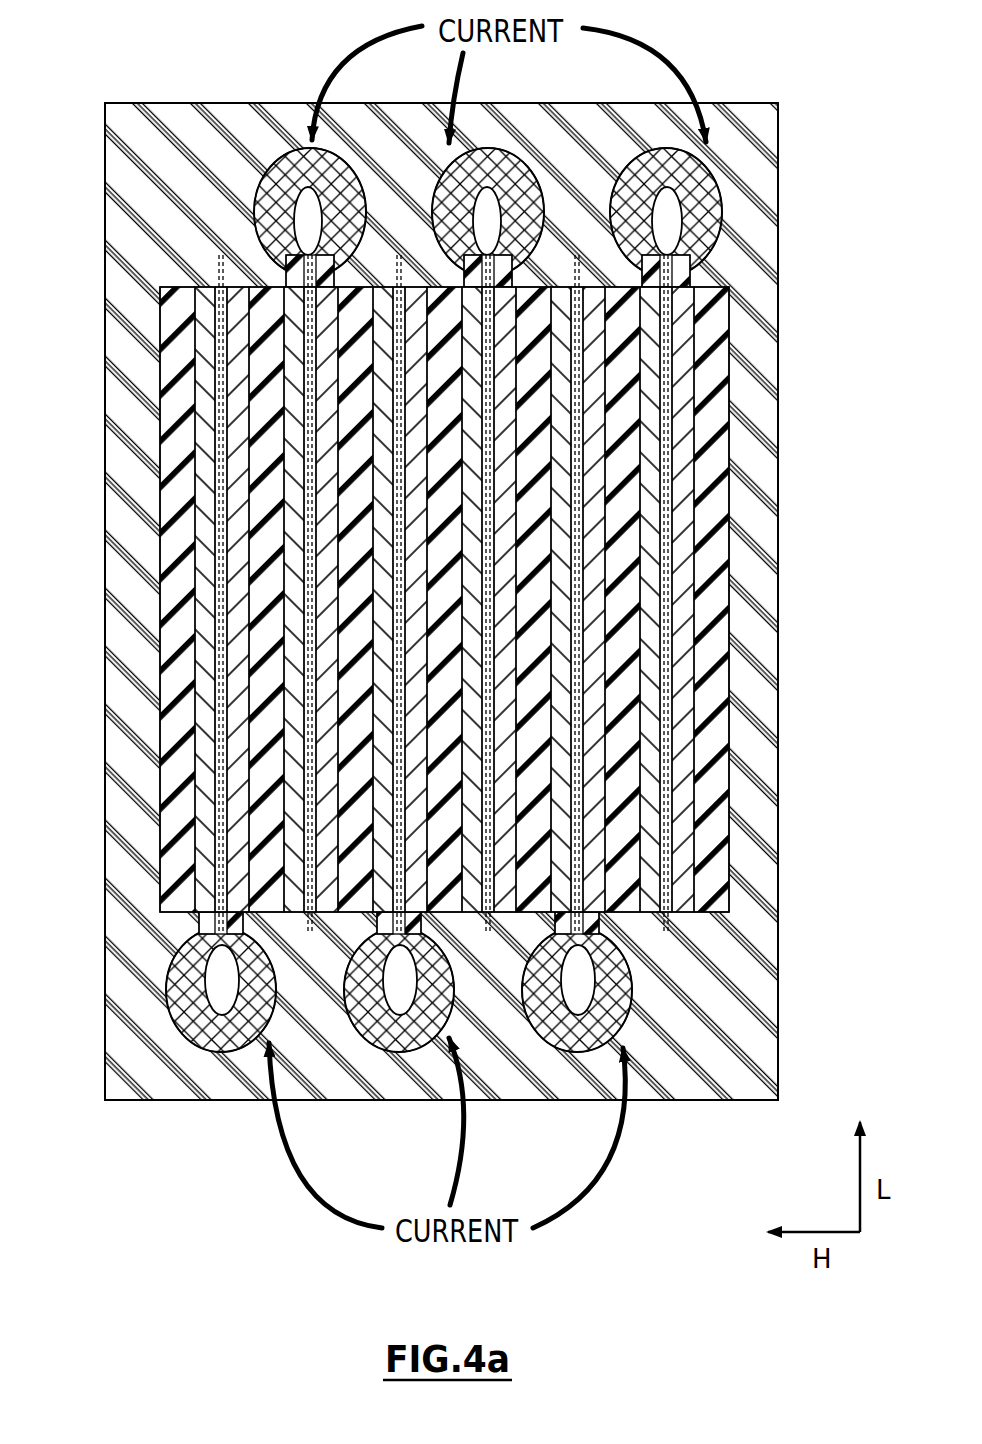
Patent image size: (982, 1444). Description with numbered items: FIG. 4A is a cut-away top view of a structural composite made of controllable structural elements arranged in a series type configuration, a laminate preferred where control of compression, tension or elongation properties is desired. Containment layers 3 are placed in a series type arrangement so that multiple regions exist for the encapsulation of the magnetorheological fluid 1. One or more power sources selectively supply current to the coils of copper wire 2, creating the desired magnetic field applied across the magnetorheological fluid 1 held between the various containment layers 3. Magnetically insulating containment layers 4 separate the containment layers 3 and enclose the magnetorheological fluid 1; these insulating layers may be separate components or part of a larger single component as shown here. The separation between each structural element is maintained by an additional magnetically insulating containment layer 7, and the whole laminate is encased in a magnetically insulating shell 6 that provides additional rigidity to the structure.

The magnetorheological fluid 1 is at (200, 374).
The coils of copper wire 2 is at (377, 157).
The containment layers 3 is at (205, 340).
The magnetically insulating containment layers 4 is at (284, 250).
The magnetically insulating shell 6 is at (140, 137).
The additional magnetically insulating containment layer 7 is at (221, 298).